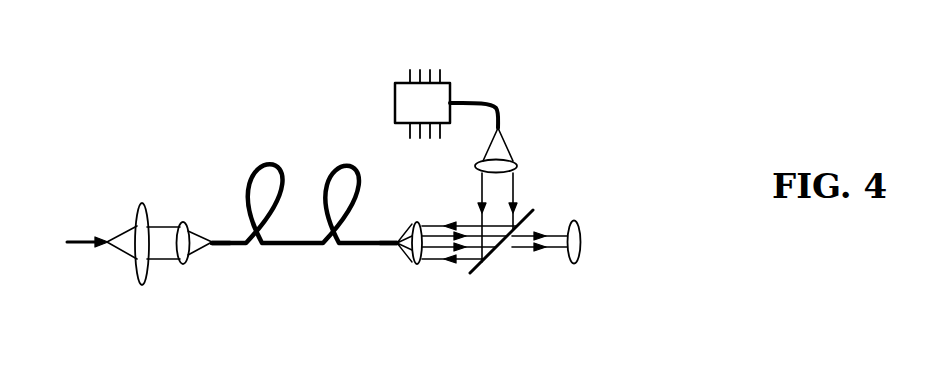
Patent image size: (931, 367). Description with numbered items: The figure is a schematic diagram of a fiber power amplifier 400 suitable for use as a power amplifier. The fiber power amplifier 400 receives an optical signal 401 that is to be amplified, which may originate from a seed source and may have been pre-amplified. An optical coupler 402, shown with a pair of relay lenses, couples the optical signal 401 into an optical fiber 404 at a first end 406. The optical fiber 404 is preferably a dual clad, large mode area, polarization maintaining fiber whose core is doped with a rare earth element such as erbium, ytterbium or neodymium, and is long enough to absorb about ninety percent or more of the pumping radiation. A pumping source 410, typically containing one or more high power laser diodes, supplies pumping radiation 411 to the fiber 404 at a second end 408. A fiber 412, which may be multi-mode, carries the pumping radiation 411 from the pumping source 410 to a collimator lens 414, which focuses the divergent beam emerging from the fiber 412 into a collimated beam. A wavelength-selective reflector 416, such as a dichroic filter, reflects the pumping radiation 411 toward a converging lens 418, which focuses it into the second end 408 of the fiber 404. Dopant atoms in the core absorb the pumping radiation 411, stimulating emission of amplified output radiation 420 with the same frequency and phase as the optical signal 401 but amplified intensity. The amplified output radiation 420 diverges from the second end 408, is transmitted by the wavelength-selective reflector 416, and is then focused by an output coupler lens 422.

The fiber power amplifier 400 is at (114, 74).
The optical signal 401 is at (93, 244).
The optical coupler 402 is at (208, 205).
The optical fiber 404 is at (255, 170).
The first end 406 is at (226, 246).
The second end 408 is at (380, 246).
The pumping source 410 is at (395, 103).
The pumping radiation 411 is at (480, 193).
The fiber 412 is at (500, 106).
The collimator lens 414 is at (518, 167).
The wavelength-selective reflector 416 is at (495, 249).
The converging lens 418 is at (407, 267).
The amplified output radiation 420 is at (517, 248).
The output coupler lens 422 is at (578, 225).